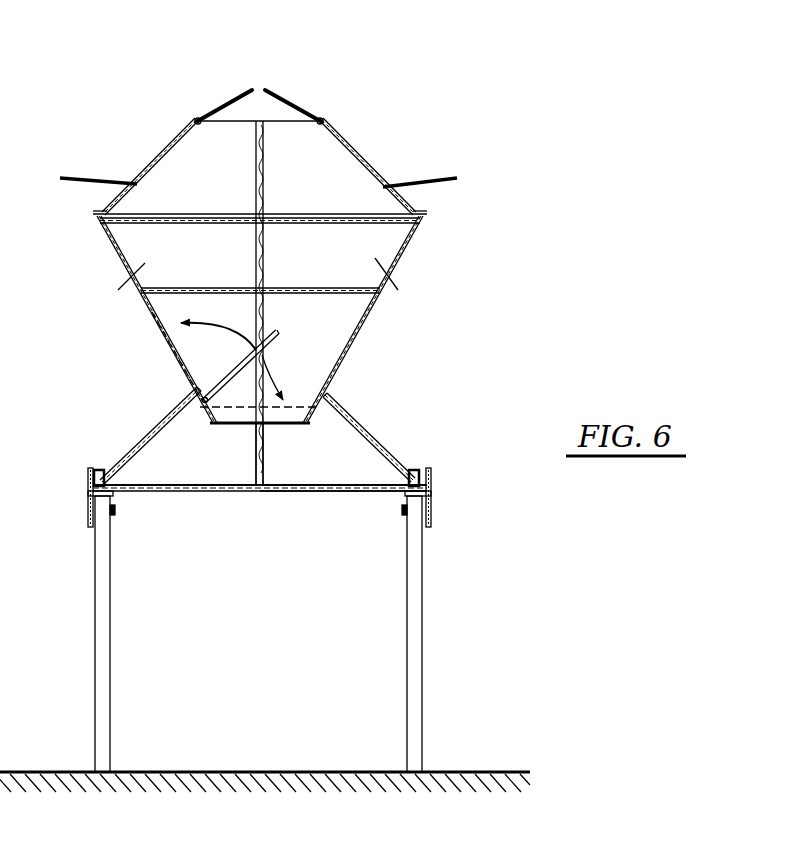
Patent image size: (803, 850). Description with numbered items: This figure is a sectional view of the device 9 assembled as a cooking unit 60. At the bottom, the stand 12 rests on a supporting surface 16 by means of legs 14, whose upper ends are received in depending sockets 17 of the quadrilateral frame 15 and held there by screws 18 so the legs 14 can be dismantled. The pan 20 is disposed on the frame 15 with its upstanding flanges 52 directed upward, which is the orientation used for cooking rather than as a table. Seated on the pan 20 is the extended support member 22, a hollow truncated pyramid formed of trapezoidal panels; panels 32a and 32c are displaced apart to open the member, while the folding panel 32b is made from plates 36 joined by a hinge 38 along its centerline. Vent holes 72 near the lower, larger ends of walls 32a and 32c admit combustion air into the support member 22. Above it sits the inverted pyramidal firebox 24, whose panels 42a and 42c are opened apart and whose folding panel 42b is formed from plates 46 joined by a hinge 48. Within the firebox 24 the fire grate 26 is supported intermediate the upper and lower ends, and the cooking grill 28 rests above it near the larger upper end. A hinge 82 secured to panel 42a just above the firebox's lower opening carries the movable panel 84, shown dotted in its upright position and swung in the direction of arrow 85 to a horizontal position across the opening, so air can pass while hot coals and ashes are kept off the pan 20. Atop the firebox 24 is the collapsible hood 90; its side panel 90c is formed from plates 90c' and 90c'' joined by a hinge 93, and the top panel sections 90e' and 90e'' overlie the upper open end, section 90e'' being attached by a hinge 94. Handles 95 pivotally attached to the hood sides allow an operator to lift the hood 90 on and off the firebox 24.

The device 9 is at (481, 134).
The cooking unit 60 is at (453, 232).
The hood 90 is at (152, 159).
The side panel 90c is at (369, 144).
The plate 90c' is at (167, 193).
The plate 90c'' is at (331, 193).
The top panel section 90e' is at (301, 90).
The top panel section 90e'' is at (222, 90).
The hinge 94 is at (195, 118).
The handle 95 is at (78, 177).
The hinge 93 is at (267, 168).
The cooking grill 28 is at (208, 218).
The panel 42b is at (223, 258).
The panel 42a is at (120, 275).
The panel 42c is at (412, 243).
The plate 46 is at (125, 285).
The fire grate 26 is at (312, 288).
The hinge 48 is at (266, 300).
The movable panel 84 is at (243, 357).
The hinge 82 is at (205, 397).
The arrow 85 is at (262, 355).
The firebox 24 is at (366, 338).
The support member 22 is at (363, 408).
The panel 32a is at (167, 405).
The panel 32b is at (171, 444).
The panel 32c is at (345, 400).
The vent hole 72 is at (135, 447).
The flange 52 is at (100, 470).
The hinge 38 is at (260, 468).
The stand 12 is at (215, 495).
The pan 20 is at (320, 495).
The plate 36 is at (185, 460).
The frame 15 is at (428, 497).
The socket 17 is at (88, 515).
The screw 18 is at (114, 512).
The leg 14 is at (94, 650).
The supporting surface 16 is at (220, 772).